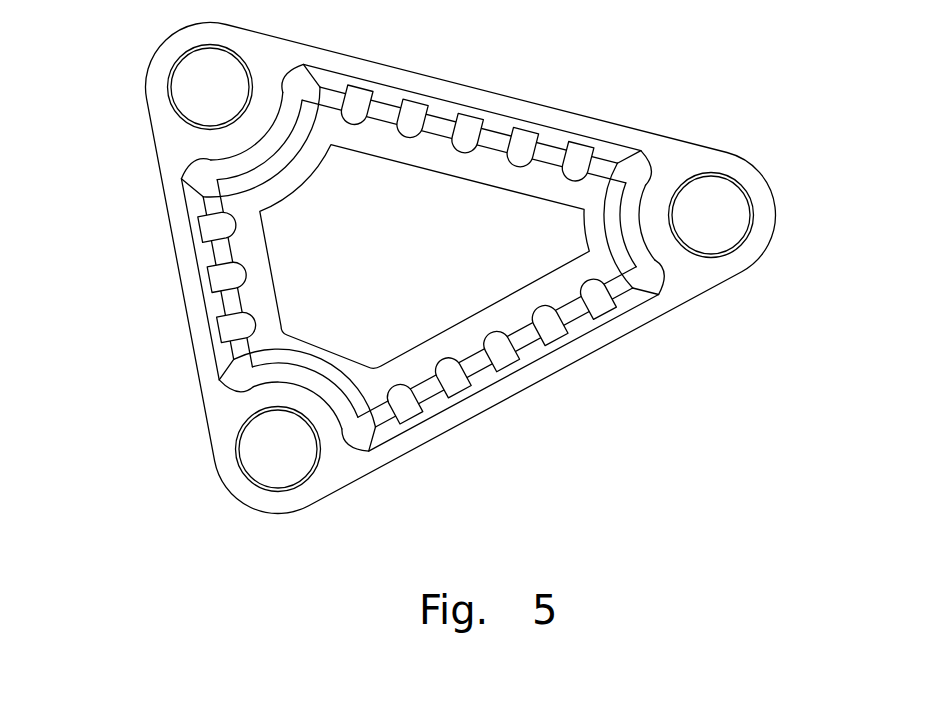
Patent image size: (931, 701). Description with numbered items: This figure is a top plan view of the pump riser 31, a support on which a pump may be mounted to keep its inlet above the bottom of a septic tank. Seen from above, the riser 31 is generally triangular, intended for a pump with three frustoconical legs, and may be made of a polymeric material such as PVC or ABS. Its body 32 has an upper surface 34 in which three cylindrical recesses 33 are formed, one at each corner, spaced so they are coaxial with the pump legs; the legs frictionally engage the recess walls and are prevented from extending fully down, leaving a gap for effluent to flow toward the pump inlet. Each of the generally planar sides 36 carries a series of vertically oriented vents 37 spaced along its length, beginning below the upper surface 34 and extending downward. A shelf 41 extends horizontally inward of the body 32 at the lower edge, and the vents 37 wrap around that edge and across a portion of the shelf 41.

The pump riser 31 is at (404, 267).
The body 32 is at (190, 286).
The recesses 33 is at (195, 101).
The upper surface 34 is at (167, 130).
The sides 36 is at (450, 80).
The vents 37 is at (467, 140).
The shelf 41 is at (597, 265).